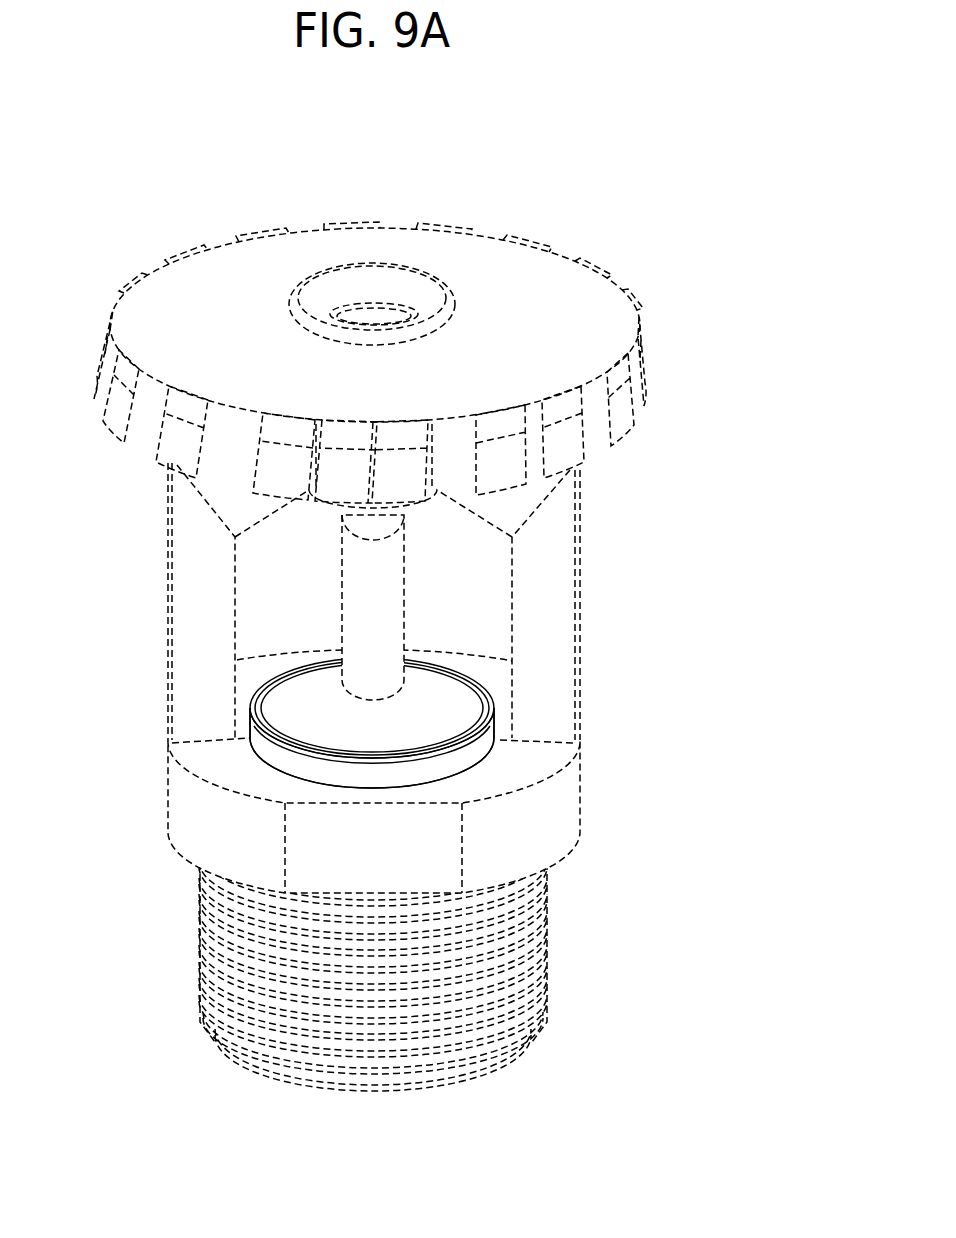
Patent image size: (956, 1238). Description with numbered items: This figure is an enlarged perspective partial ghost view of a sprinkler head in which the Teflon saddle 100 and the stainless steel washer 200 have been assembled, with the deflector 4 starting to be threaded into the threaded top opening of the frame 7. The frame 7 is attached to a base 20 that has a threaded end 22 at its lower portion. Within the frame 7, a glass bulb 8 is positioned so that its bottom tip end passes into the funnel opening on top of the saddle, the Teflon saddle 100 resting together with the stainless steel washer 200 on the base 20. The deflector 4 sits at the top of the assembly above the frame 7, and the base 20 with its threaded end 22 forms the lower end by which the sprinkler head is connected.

The deflector 4 is at (520, 283).
The frame 7 is at (198, 587).
The glass bulb 8 is at (388, 610).
The stainless steel washer 200 is at (437, 708).
The Teflon saddle 100 is at (467, 753).
The base 20 is at (550, 810).
The threaded end 22 is at (530, 975).